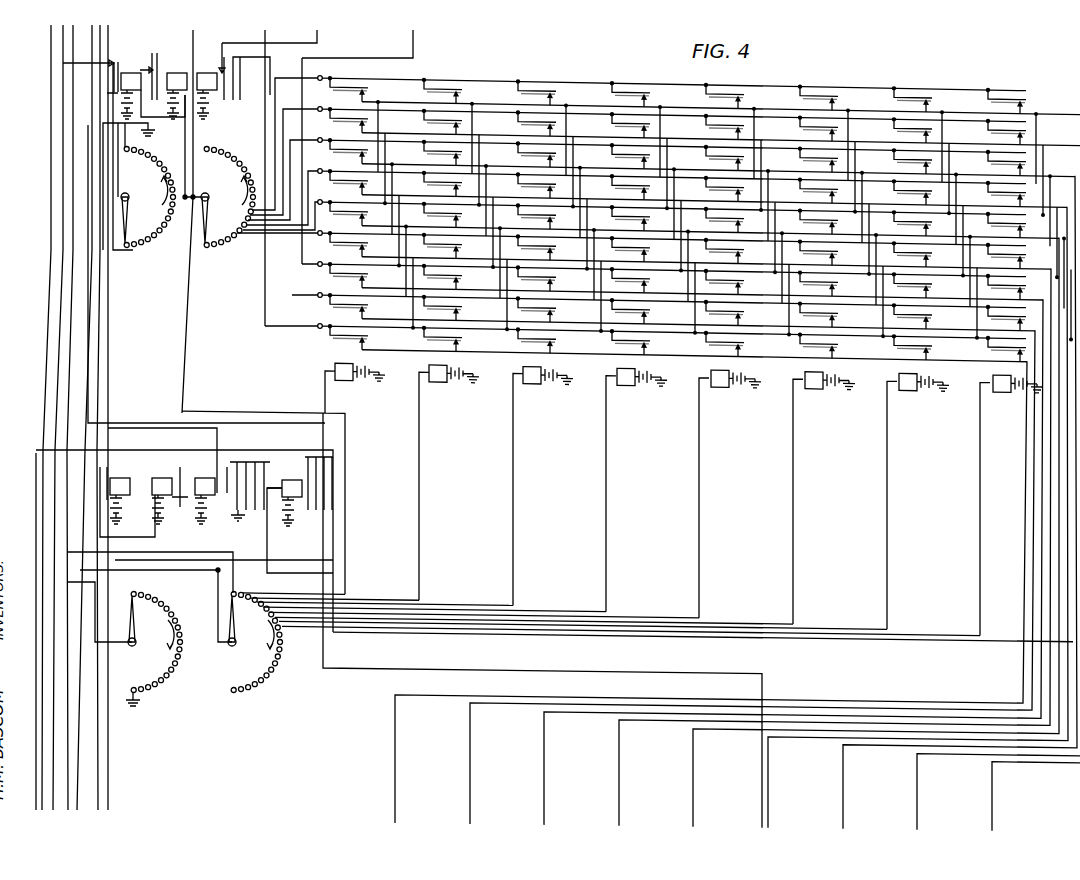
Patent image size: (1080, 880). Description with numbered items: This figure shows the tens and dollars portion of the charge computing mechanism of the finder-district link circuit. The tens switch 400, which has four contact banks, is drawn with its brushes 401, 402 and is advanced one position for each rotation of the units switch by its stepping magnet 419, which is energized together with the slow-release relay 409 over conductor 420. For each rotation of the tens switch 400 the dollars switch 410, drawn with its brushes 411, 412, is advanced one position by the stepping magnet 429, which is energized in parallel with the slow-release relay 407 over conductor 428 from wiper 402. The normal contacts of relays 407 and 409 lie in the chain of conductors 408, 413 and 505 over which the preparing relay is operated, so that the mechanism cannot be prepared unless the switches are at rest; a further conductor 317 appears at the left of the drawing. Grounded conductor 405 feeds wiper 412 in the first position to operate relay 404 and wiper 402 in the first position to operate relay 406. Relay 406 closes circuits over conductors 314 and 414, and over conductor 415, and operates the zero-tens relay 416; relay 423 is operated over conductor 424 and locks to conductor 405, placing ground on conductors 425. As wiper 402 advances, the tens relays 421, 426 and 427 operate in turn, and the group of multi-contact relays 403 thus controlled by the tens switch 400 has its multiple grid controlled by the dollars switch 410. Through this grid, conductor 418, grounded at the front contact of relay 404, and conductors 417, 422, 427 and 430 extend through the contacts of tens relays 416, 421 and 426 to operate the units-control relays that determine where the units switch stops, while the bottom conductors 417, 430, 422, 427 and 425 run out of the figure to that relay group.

The conductor 505 is at (50, 217).
The conductor 317 is at (50, 278).
The slow-release relay 407 is at (131, 72).
The stepping magnet 429 is at (173, 72).
The relay 404 is at (205, 72).
The brush 411 is at (128, 220).
The brush 412 is at (212, 222).
The dollars switch 410 is at (130, 183).
The conductor 314 is at (88, 322).
The conductor 408 is at (108, 353).
The conductor 405 is at (193, 345).
The conductor 428 is at (364, 642).
The conductor 418 is at (318, 326).
The conductor 415 is at (36, 450).
The stepping magnet 419 is at (127, 498).
The slow-release relay 409 is at (168, 491).
The relay 406 is at (231, 491).
The relay 423 is at (292, 479).
The tens relay 416 is at (345, 385).
The tens relay 421 is at (438, 386).
The tens relay 426 is at (532, 388).
The tens relay 427 is at (628, 390).
The group of multi-contact relays 403 is at (627, 505).
The brush 401 is at (137, 645).
The brush 402 is at (237, 645).
The conductor 420 is at (100, 726).
The conductor 414 is at (70, 738).
The conductor 413 is at (108, 765).
The conductor 424 is at (108, 798).
The tens switch 400 is at (200, 651).
The conductor 417 is at (396, 757).
The conductor 430 is at (470, 757).
The conductor 422 is at (544, 757).
The conductors 425 is at (693, 755).